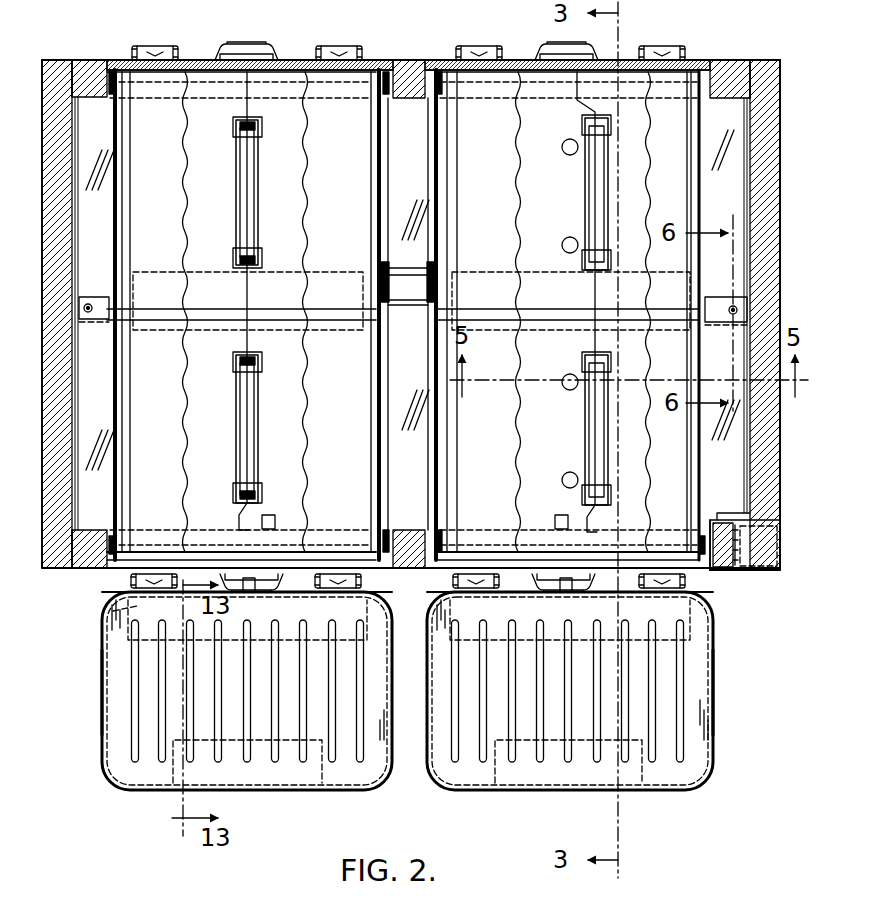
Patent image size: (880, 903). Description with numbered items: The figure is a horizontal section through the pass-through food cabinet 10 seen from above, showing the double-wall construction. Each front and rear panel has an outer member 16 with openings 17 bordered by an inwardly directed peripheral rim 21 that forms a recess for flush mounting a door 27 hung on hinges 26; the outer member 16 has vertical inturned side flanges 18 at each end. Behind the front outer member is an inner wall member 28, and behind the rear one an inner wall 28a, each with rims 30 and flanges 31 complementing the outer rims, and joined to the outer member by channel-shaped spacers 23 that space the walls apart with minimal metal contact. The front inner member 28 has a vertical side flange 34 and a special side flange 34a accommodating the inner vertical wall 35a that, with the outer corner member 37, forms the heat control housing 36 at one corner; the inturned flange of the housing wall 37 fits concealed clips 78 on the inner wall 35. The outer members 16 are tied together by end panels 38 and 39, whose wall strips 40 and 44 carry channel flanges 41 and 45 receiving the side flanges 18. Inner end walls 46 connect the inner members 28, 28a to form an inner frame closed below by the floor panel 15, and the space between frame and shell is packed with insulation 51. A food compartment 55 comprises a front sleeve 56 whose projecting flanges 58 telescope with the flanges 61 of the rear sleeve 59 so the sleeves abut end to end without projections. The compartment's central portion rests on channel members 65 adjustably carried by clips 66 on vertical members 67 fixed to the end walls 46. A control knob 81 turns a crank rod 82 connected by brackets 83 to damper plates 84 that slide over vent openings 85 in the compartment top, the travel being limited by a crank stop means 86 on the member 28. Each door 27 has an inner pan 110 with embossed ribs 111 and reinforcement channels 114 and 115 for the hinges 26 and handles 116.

The cabinet 10 is at (72, 624).
The cabinet floor panel 15 is at (419, 189).
The outer member 16 is at (410, 62).
The opening 17 is at (387, 73).
The side flange 18 is at (68, 90).
The peripheral rim 21 is at (370, 594).
The channel-shaped spacer 23 is at (386, 82).
The hinge 26 is at (146, 50).
The door 27 is at (100, 755).
The inner wall member 28 is at (408, 534).
The inner wall 28a is at (410, 102).
The rim 30 is at (120, 115).
The flange 31 is at (383, 110).
The vertical side flange 34 is at (72, 524).
The special vertical side flange 34a is at (745, 517).
The vertical flange 35 is at (74, 116).
The inner vertical wall 35a is at (758, 546).
The heat control housing 36 is at (768, 582).
The outer corner member 37 is at (780, 555).
The vertical end panel 38 is at (42, 302).
The vertical end panel 39 is at (780, 230).
The vertical wall strip 40 is at (70, 62).
The channel flange 41 is at (72, 90).
The wall strip 44 is at (768, 63).
The channel flange 45 is at (737, 72).
The inner end wall 46 is at (76, 237).
The insulation 51 is at (56, 411).
The food compartment 55 is at (346, 426).
The front sleeve 56 is at (118, 425).
The projecting flange 58 is at (387, 332).
The rear sleeve 59 is at (117, 200).
The projecting flange 61 is at (388, 272).
The channel member 65 is at (402, 300).
The clip 66 is at (92, 332).
The vertical member 67 is at (88, 297).
The clip 78 is at (736, 555).
The control knob 81 is at (249, 592).
The crank rod 82 is at (248, 302).
The bracket 83 is at (236, 136).
The damper plate 84 is at (256, 188).
The vent opening 85 is at (568, 158).
The crank stop means 86 is at (270, 520).
The inner pan member 110 is at (130, 777).
The embossed rib 111 is at (133, 694).
The reinforcement channel 114 is at (135, 607).
The reinforcement channel 115 is at (250, 782).
The handle 116 is at (237, 44).